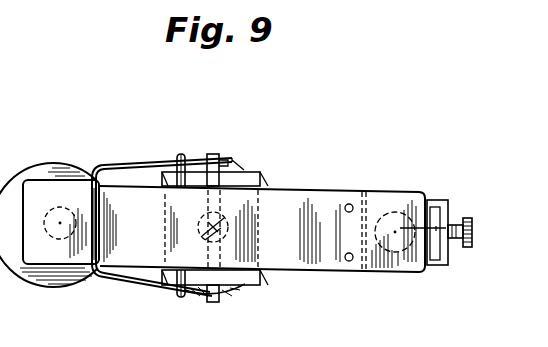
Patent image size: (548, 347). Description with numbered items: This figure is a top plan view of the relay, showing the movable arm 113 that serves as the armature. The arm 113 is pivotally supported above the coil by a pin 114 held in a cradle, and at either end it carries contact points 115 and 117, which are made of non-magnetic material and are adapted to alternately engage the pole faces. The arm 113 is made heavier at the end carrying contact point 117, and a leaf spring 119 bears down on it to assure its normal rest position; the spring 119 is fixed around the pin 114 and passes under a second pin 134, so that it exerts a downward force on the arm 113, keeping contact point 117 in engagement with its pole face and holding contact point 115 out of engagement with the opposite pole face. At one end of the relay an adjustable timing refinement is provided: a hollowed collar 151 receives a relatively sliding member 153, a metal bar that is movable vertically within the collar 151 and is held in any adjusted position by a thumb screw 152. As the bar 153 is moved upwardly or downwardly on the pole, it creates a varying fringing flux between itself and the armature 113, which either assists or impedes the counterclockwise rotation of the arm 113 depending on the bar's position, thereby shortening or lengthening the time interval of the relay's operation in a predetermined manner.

The movable arm 113 is at (283, 196).
The pin 114 is at (217, 155).
The contact point 115 is at (450, 218).
The contact point 117 is at (61, 202).
The leaf spring 119 is at (122, 166).
The pin 134 is at (183, 156).
The collar 151 is at (443, 265).
The thumb screw 152 is at (470, 228).
The sliding member 153 is at (434, 256).